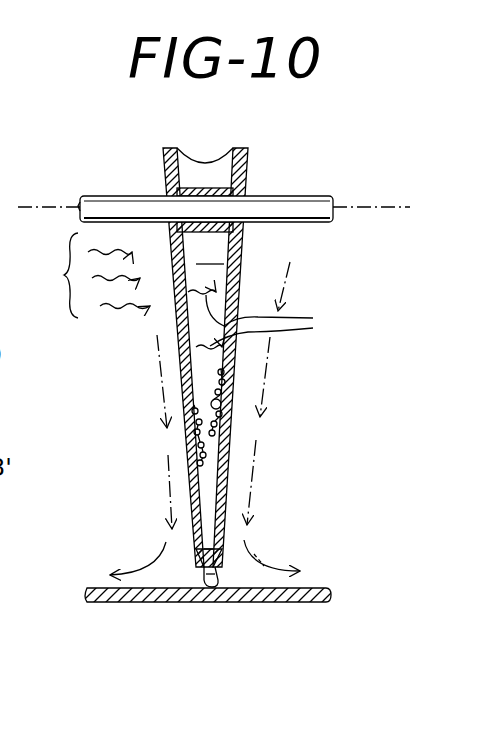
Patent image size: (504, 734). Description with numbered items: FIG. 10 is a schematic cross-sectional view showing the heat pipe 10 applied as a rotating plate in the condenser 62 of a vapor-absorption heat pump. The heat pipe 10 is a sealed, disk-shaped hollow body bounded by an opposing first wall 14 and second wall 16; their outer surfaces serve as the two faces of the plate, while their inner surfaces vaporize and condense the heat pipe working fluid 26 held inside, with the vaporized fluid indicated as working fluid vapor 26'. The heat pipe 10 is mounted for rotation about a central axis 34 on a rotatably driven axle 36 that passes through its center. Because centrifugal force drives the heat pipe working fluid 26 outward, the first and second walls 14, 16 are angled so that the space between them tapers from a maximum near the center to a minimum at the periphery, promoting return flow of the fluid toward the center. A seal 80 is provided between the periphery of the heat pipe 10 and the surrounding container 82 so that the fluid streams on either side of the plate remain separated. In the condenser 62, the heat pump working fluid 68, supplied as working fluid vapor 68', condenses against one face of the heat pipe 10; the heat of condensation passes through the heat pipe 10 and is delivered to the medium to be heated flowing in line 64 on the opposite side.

The heat pipe 10 is at (239, 401).
The first wall 14 is at (188, 493).
The second wall 16 is at (228, 508).
The heat pipe working fluid 26 is at (264, 420).
The solder ball feed stream 26' is at (278, 320).
The central axis 34 is at (355, 207).
The rotatably driven axle 36 is at (101, 199).
The condenser 62 is at (242, 566).
The line 64 is at (299, 268).
The heat pump working fluid 68 is at (183, 549).
The working fluid vapor 68' is at (76, 275).
The seal 80 is at (232, 587).
The container 82 is at (333, 597).